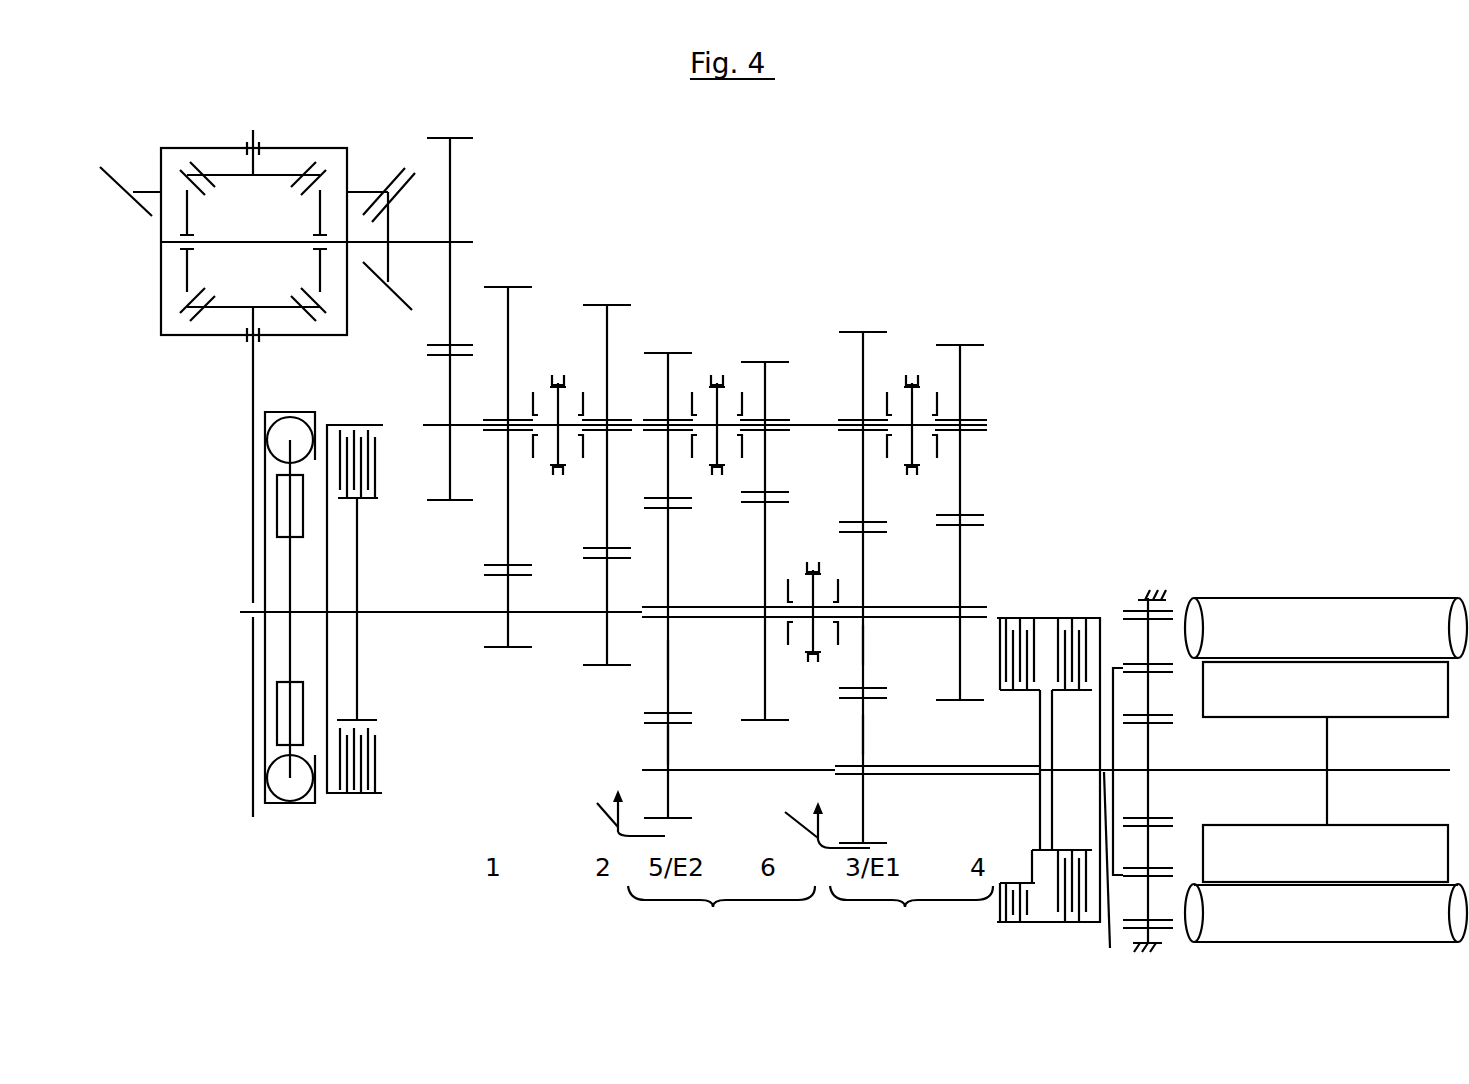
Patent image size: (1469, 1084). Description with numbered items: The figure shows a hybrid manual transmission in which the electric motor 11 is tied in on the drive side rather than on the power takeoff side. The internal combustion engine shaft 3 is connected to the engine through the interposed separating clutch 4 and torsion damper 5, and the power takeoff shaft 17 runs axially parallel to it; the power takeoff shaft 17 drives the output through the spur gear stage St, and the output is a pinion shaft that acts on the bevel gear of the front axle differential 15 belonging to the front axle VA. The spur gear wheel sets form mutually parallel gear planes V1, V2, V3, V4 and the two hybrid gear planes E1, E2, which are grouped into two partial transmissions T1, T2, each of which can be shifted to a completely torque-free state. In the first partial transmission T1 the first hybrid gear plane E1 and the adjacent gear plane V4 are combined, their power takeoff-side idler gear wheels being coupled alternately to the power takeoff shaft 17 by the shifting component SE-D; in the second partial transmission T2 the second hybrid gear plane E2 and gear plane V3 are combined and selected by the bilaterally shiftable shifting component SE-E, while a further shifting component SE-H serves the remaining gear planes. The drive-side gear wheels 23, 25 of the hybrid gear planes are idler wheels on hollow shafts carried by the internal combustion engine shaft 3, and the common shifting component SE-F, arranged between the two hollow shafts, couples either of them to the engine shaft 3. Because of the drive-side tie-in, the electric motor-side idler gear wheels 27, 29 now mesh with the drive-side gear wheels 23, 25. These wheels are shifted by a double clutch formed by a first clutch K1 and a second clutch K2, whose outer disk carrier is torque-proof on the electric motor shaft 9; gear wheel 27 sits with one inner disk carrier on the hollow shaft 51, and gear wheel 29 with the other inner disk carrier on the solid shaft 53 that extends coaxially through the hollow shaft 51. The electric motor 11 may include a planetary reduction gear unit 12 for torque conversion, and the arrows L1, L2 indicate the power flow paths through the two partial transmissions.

The front axle differential 15 is at (291, 148).
The front axle VA is at (250, 398).
The spur gear stage St is at (450, 301).
The torsion damper 5 is at (290, 803).
The separating clutch 4 is at (357, 793).
The power takeoff shaft 17 is at (432, 425).
The internal combustion engine shaft 3 is at (420, 612).
The gear plane V1 is at (508, 450).
The gear plane V2 is at (607, 468).
The gear plane V3 is at (765, 524).
The gear plane V4 is at (960, 506).
The first hybrid gear plane E1 is at (863, 570).
The second hybrid gear plane E2 is at (668, 569).
The shifting component SE-H is at (553, 404).
The bilaterally shiftable shifting component SE-E is at (717, 374).
The shiftable shifting component SE-D is at (912, 374).
The common shifting component SE-F is at (813, 561).
The drive-side gear wheel 25 is at (668, 660).
The electric motor-side idler gear wheel 29 is at (667, 745).
The drive-side gear wheel 23 is at (863, 643).
The electric motor-side idler gear wheel 27 is at (863, 733).
The solid shaft 53 is at (737, 771).
The hollow shaft 51 is at (949, 778).
The power flow path 1 L1 is at (819, 819).
The power flow path 2 L2 is at (611, 813).
The first partial transmission T1 is at (911, 918).
The second partial transmission T2 is at (721, 918).
The first clutch K1 is at (1020, 610).
The second clutch K2 is at (1071, 610).
The electric motor shaft 9 is at (1146, 775).
The planetary reduction gear unit 12 is at (1134, 606).
The electric motor 11 is at (1298, 598).